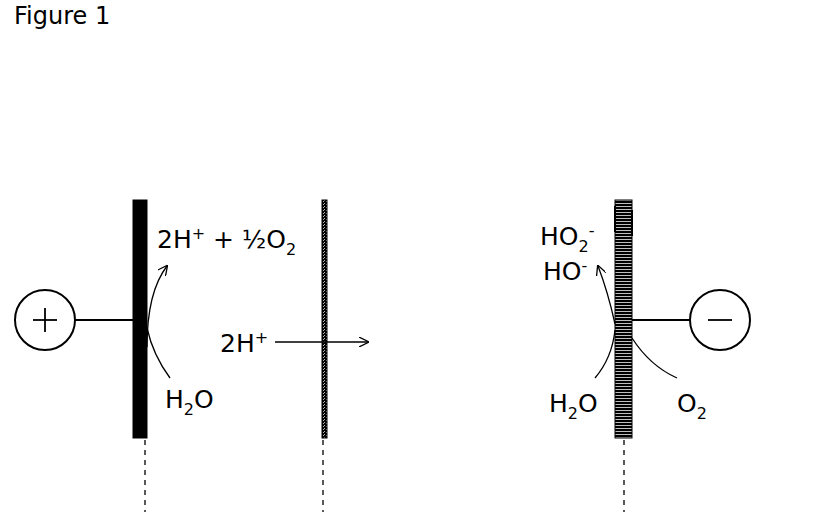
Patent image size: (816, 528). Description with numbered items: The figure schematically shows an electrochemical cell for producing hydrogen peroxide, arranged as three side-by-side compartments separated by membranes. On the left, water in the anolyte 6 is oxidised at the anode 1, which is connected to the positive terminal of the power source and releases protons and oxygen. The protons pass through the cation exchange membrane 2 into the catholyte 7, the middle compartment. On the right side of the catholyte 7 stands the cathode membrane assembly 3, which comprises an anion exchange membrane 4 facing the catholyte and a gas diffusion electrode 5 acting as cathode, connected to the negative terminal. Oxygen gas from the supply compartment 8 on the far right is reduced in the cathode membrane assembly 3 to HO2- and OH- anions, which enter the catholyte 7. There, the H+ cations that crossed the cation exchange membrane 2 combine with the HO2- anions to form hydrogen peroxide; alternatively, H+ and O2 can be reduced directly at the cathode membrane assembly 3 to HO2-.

The anode 1 is at (132, 203).
The cation exchange membrane 2 is at (322, 200).
The cathode membrane assembly 3 is at (625, 200).
The anion exchange membrane 4 is at (613, 212).
The gas diffusion electrode 5 is at (633, 225).
The anolyte 6 is at (195, 476).
The catholyte 7 is at (404, 476).
The supply compartment 8 is at (674, 476).